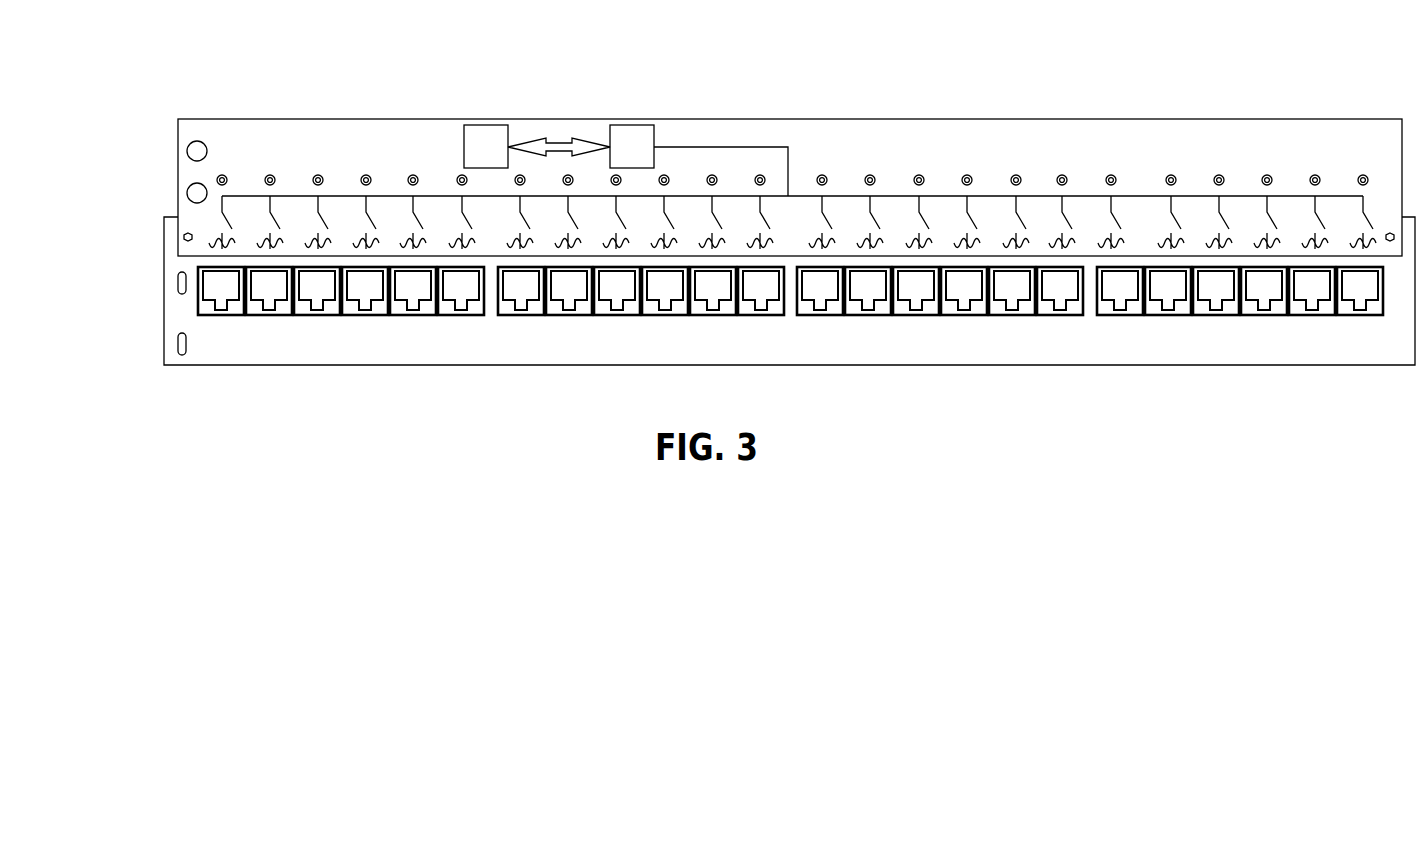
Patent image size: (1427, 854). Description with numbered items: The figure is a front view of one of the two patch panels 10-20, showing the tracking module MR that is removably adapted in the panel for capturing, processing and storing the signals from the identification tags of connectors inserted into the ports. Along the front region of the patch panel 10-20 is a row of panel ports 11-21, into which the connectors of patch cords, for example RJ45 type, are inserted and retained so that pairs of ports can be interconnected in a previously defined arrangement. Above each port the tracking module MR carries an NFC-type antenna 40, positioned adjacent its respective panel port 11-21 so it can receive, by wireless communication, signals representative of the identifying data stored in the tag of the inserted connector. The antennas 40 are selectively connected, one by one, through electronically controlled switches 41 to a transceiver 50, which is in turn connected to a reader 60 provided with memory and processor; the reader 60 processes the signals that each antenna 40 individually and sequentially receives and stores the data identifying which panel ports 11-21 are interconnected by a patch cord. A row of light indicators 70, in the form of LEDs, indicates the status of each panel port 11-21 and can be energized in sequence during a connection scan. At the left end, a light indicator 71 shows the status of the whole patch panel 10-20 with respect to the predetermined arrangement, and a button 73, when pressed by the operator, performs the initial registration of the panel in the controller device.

The patch panels 10-20 is at (1080, 367).
The panel ports 11-21 is at (272, 287).
The tracking module MR is at (870, 118).
The NFC-type antenna 40 is at (266, 242).
The switch 41 is at (465, 219).
The transceiver 50 is at (657, 133).
The reader 60 is at (512, 133).
The light indicators 70 is at (273, 172).
The light indicator 71 is at (186, 188).
The button 73 is at (199, 140).